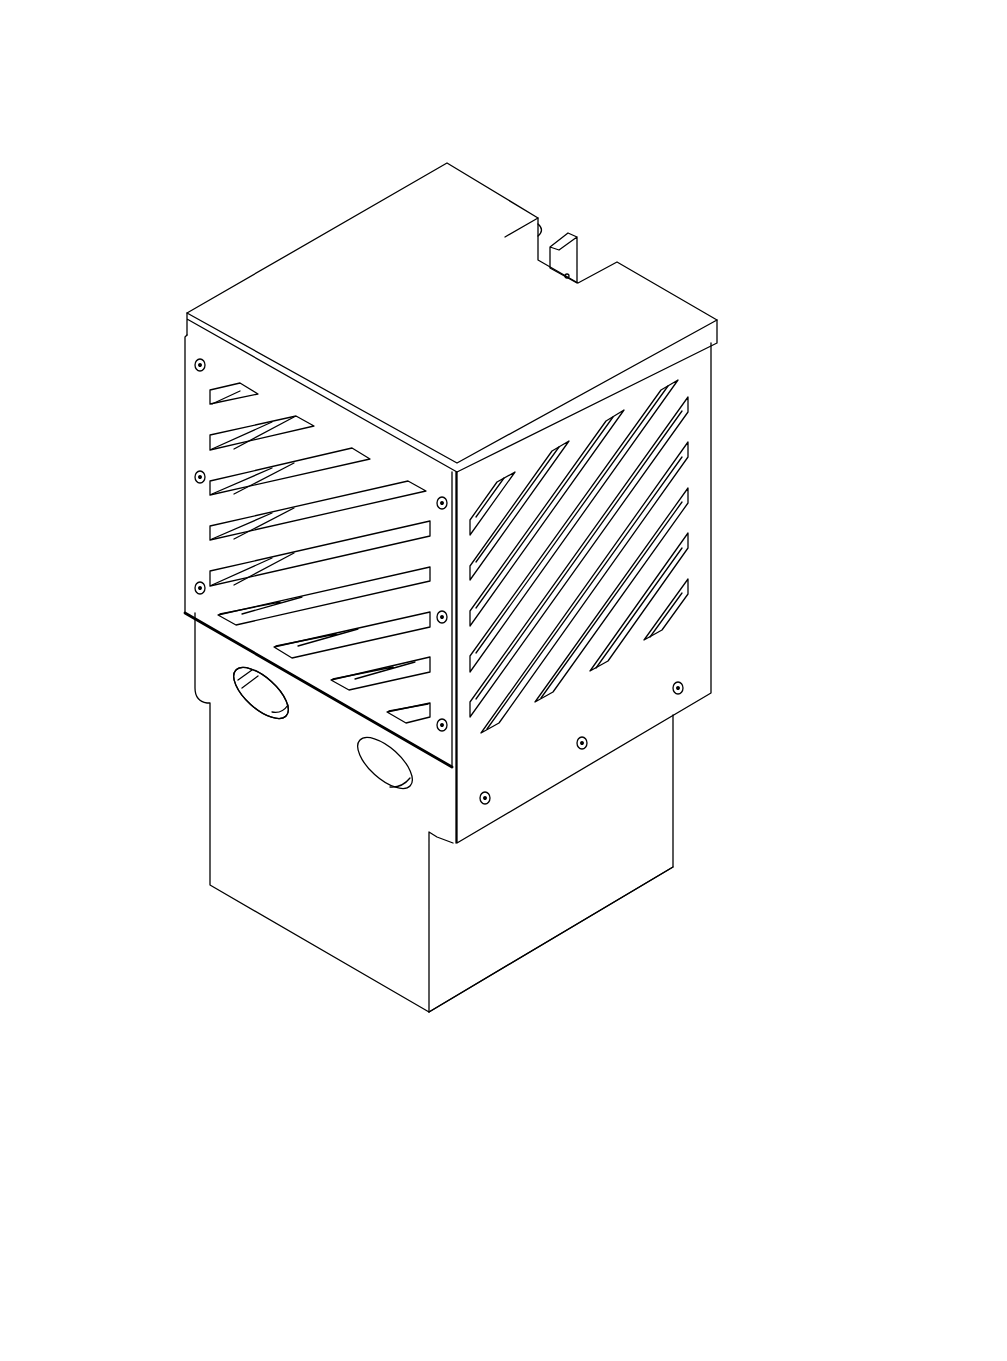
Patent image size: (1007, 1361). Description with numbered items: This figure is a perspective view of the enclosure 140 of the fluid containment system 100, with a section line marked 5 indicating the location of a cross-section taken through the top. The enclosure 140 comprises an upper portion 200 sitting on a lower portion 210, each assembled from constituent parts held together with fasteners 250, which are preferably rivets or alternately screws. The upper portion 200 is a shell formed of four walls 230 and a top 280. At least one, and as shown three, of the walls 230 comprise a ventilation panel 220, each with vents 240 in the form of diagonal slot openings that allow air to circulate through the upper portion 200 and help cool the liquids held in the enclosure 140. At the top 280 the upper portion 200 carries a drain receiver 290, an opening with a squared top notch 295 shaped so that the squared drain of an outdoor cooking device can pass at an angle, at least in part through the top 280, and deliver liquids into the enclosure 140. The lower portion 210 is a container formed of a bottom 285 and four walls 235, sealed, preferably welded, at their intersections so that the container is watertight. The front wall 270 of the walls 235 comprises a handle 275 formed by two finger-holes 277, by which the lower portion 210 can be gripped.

The fluid containment system 100 is at (199, 57).
The enclosure 140 is at (196, 129).
The upper portion 200 is at (716, 516).
The lower portion 210 is at (676, 748).
The ventilation panel 220 is at (197, 405).
The walls 230 is at (185, 350).
The vent 240 is at (197, 528).
The fasteners 250 is at (195, 590).
The walls 235 is at (207, 778).
The front wall 270 is at (207, 832).
The handle 275 is at (288, 710).
The finger-holes 277 is at (237, 680).
The top 280 is at (342, 222).
The bottom 285 is at (532, 952).
The drain receiver 290 is at (604, 256).
The top notch 295 is at (543, 262).
The section line 5- 5 is at (598, 170).